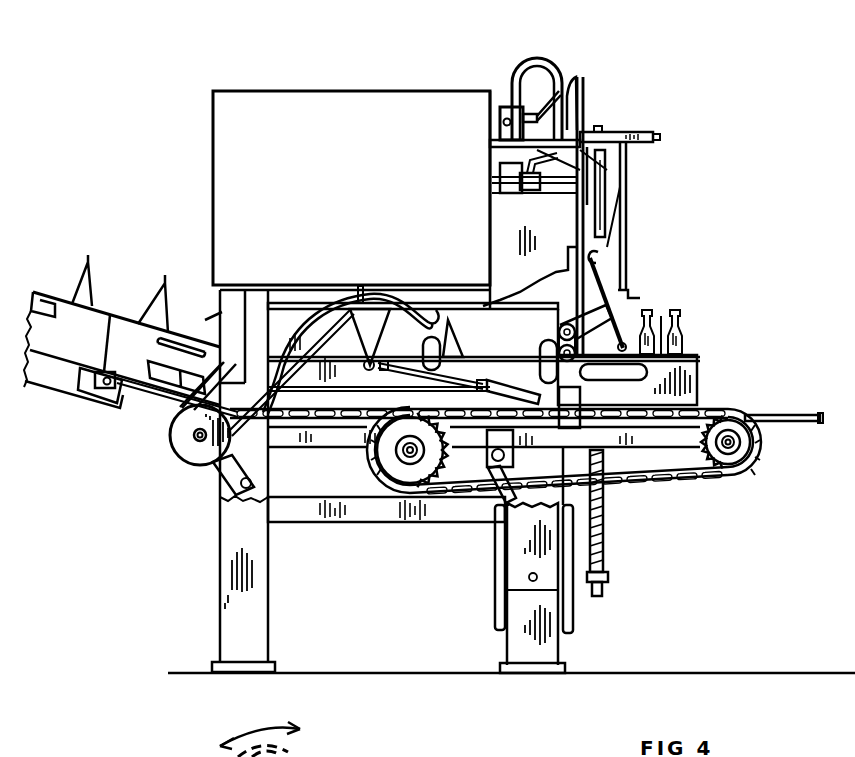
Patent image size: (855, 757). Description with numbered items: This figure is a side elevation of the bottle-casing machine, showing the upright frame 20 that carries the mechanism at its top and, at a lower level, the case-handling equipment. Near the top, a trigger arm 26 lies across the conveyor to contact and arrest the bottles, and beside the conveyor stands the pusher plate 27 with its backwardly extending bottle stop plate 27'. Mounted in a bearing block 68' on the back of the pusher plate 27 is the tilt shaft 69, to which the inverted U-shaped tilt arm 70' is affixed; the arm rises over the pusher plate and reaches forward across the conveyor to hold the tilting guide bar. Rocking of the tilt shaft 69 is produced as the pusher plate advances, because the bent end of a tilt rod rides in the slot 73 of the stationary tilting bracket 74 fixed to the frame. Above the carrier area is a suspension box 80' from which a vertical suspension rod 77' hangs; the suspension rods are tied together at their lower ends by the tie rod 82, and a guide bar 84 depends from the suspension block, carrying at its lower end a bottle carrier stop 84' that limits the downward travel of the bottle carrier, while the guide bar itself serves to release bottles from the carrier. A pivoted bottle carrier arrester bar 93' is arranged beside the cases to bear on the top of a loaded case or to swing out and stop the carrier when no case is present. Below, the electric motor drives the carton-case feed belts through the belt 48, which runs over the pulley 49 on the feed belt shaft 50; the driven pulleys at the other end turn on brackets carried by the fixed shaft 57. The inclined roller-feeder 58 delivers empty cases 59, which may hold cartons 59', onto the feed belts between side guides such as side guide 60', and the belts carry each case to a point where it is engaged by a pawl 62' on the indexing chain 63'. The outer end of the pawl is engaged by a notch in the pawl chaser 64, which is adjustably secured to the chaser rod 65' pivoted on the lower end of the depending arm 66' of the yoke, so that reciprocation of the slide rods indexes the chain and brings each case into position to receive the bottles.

The upright frame 20 is at (218, 552).
The trigger arm 26 is at (537, 191).
The pusher plate 27 is at (542, 99).
The bottle stop plate 27' is at (486, 182).
The belt 48 is at (298, 373).
The pulley 49 is at (173, 458).
The feed belt shaft 50 is at (196, 435).
The fixed shaft 57 is at (407, 452).
The inclined roller-feeder 58 is at (47, 390).
The empty case 59 is at (123, 341).
The carton 59' is at (384, 326).
The side guide 60' is at (158, 367).
The pawl 62' is at (497, 459).
The indexing chain 63' is at (755, 473).
The pawl chaser 64 is at (497, 380).
The chaser rod 65' is at (432, 383).
The depending arm 66' is at (382, 328).
The bearing block 68' is at (489, 116).
The tilt shaft 69 is at (505, 122).
The tilt arm 70' is at (554, 85).
The slot 73 is at (573, 92).
The tilting bracket 74 is at (583, 109).
The suspension rod 77' is at (622, 511).
The suspension box 80' is at (630, 153).
The tie rod 82 is at (608, 572).
The guide bar 84 is at (626, 216).
The bottle carrier stop 84' is at (645, 293).
The bottle carrier arrester bar 93' is at (601, 306).